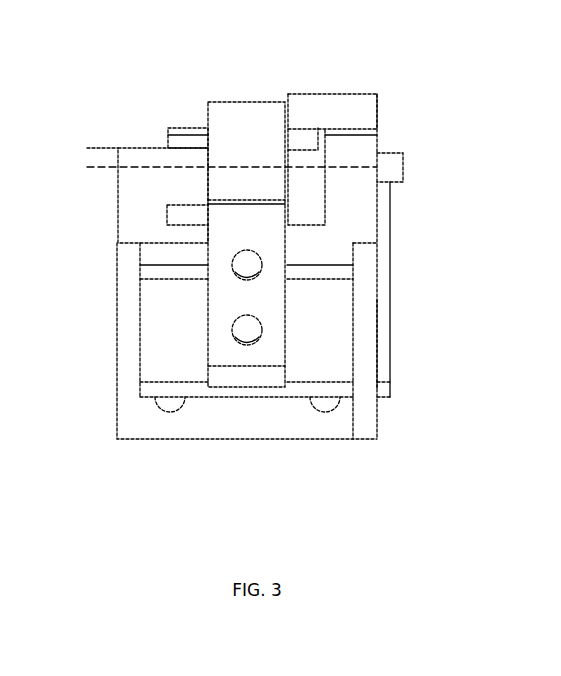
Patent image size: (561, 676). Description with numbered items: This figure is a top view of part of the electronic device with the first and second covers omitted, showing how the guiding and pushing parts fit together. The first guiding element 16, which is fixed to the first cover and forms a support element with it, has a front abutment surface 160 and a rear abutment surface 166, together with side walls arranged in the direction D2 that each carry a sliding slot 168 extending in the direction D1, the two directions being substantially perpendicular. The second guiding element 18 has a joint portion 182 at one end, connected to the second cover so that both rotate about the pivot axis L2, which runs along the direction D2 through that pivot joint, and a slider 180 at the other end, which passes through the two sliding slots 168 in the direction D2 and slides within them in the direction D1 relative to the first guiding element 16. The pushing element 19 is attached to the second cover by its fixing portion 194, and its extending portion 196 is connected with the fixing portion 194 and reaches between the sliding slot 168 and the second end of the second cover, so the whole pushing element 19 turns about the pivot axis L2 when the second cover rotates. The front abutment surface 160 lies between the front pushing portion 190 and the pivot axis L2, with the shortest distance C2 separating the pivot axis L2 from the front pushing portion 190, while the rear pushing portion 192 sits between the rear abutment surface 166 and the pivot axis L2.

The first guiding element 16 is at (253, 422).
The front abutment surface 160 is at (150, 148).
The rear abutment surface 166 is at (332, 98).
The sliding slot 168 is at (410, 345).
The second guiding element 18 is at (418, 266).
The slider 180 is at (343, 300).
The joint portion 182 is at (400, 172).
The pushing element 19 is at (292, 204).
The front pushing portion 190 is at (192, 131).
The rear pushing portion 192 is at (293, 147).
The fixing portion 194 is at (220, 310).
The extending portion 196 is at (247, 114).
The shortest distance C2 is at (92, 130).
The pivot axis L2 is at (117, 168).
The direction D1 is at (504, 203).
The direction D2 is at (478, 119).